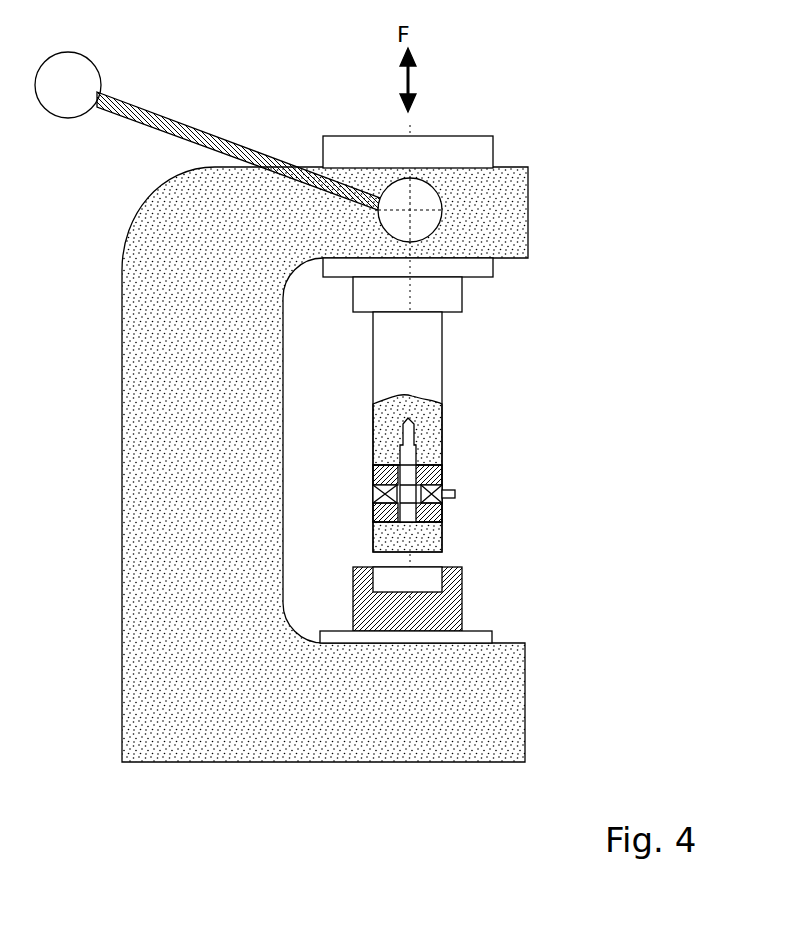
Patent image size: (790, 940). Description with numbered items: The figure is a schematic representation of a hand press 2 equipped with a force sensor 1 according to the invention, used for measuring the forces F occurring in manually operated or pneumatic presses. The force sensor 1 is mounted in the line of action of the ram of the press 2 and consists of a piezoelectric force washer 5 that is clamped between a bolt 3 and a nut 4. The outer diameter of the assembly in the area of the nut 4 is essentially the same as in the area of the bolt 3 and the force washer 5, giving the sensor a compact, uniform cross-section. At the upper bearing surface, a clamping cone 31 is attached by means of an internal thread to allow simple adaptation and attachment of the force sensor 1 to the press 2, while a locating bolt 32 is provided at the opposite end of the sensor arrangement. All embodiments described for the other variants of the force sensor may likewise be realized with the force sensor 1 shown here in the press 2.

The force sensor 1 is at (365, 470).
The press 2 is at (142, 421).
The bolt 3 is at (437, 474).
The clamping cone 31 is at (415, 453).
The locating bolt 32 is at (430, 537).
The nut 4 is at (442, 510).
The force washer 5 is at (450, 490).